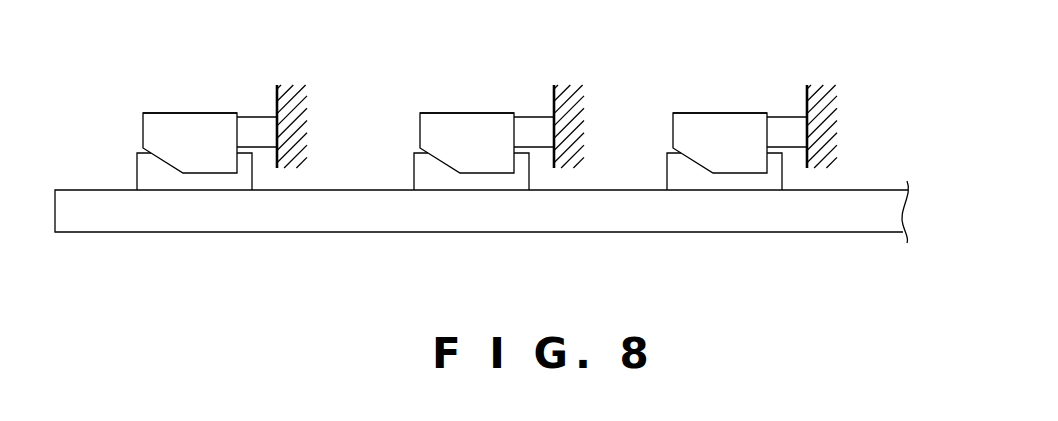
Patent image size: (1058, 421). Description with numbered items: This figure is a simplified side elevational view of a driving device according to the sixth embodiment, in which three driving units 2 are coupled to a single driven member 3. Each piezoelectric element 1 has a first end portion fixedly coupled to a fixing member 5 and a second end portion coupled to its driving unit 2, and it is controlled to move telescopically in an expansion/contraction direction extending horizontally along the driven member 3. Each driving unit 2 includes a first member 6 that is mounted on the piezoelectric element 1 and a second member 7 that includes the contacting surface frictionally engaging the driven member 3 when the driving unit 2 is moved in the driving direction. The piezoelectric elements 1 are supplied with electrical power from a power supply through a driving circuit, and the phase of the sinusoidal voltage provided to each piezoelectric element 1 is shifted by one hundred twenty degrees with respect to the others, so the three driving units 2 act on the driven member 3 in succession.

The piezoelectric element 1 is at (257, 125).
The driving unit 2 is at (193, 111).
The driven member 3 is at (189, 234).
The fixing member 5 is at (277, 86).
The first member 6 is at (162, 112).
The second member 7 is at (134, 168).